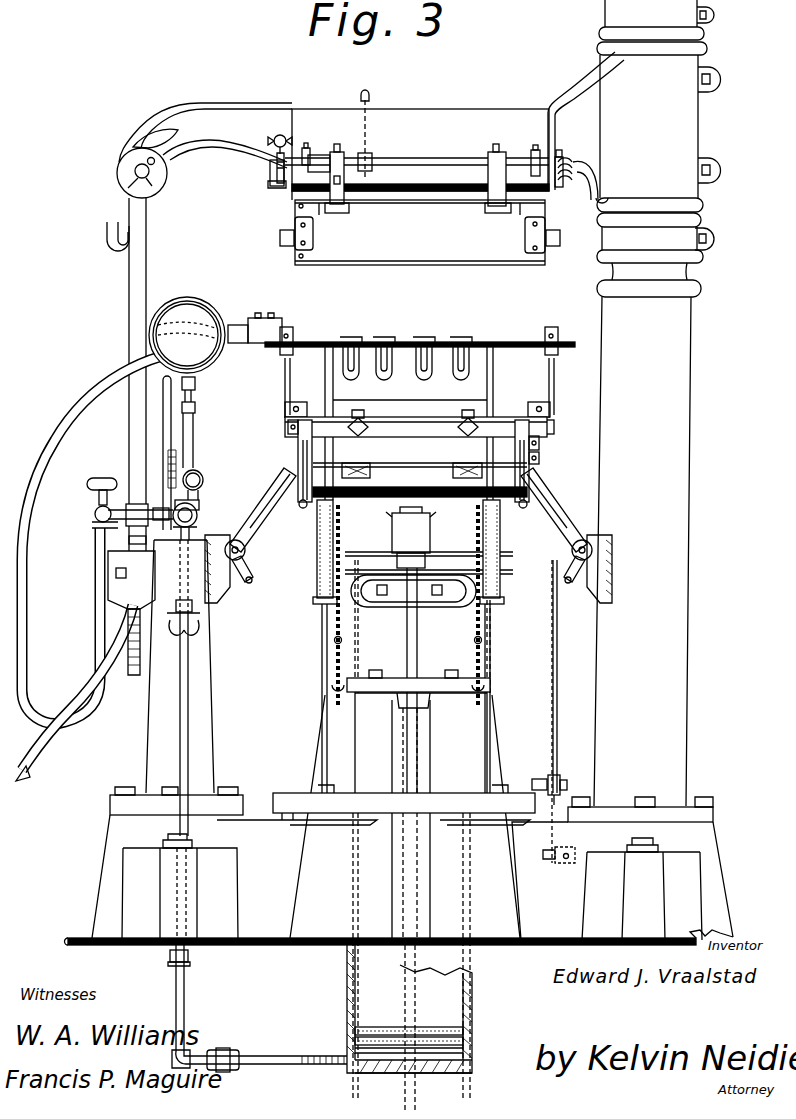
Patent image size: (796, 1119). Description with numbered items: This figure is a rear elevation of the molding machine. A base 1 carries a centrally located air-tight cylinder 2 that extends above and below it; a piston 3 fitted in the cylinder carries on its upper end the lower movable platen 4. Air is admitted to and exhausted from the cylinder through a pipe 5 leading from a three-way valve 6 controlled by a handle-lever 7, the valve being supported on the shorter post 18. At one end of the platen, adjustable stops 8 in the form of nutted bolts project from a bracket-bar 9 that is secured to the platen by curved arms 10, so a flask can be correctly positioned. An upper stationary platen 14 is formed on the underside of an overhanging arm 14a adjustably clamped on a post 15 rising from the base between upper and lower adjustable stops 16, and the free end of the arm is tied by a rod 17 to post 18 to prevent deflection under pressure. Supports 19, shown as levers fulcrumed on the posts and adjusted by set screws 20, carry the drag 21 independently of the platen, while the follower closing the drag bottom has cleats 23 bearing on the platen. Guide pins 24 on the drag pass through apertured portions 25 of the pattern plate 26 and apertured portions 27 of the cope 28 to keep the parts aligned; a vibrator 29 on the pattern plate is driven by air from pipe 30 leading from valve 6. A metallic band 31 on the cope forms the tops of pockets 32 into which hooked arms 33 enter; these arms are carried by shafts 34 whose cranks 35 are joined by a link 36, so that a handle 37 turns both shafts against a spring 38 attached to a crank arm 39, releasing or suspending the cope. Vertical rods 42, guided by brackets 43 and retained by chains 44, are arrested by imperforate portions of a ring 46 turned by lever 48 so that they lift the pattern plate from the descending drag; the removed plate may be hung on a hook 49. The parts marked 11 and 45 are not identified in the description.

The base 1 is at (565, 948).
The air-tight cylinder 2 is at (468, 1026).
The piston 3 is at (455, 997).
The platen 4 is at (312, 508).
The pipe 5 is at (268, 1062).
The three-way valve 6 is at (198, 512).
The handle-lever 7 is at (172, 432).
The stops 8 is at (364, 418).
The bracket-bar 9 is at (416, 430).
The curved arms 10 is at (298, 455).
The right link arm 11 is at (548, 492).
The upper stationary platen 14 is at (302, 188).
The overhanging arm 14a is at (310, 110).
The post 15 is at (683, 472).
The adjustable stops 16 is at (608, 22).
The rod 17 is at (132, 315).
The second post 18 is at (207, 735).
The supports 19 is at (270, 498).
The set screws 20 is at (250, 584).
The drag 21 is at (548, 418).
The cleats 23 is at (452, 473).
The guide pins 24 is at (284, 382).
The apertured portions 25 is at (292, 340).
The pattern plate 26 is at (345, 345).
The apertured portions 27 is at (283, 244).
The cope 28 is at (430, 265).
The vibrator 29 is at (262, 330).
The pipe 30 is at (42, 538).
The metallic band 31 is at (320, 215).
The pockets 32 is at (345, 205).
The hooked arms 33 is at (345, 212).
The shafts 34 is at (405, 166).
The cranks 35 is at (281, 134).
The link 36 is at (270, 175).
The handle 37 is at (371, 105).
The spring 38 is at (582, 190).
The crank arm 39 is at (562, 160).
The rods 42 is at (322, 672).
The brackets 43 is at (316, 573).
The chains 44 is at (330, 640).
The ram pedestal 45 is at (405, 808).
The ring 46 is at (285, 800).
The lever 48 is at (553, 752).
The hook 49 is at (106, 246).